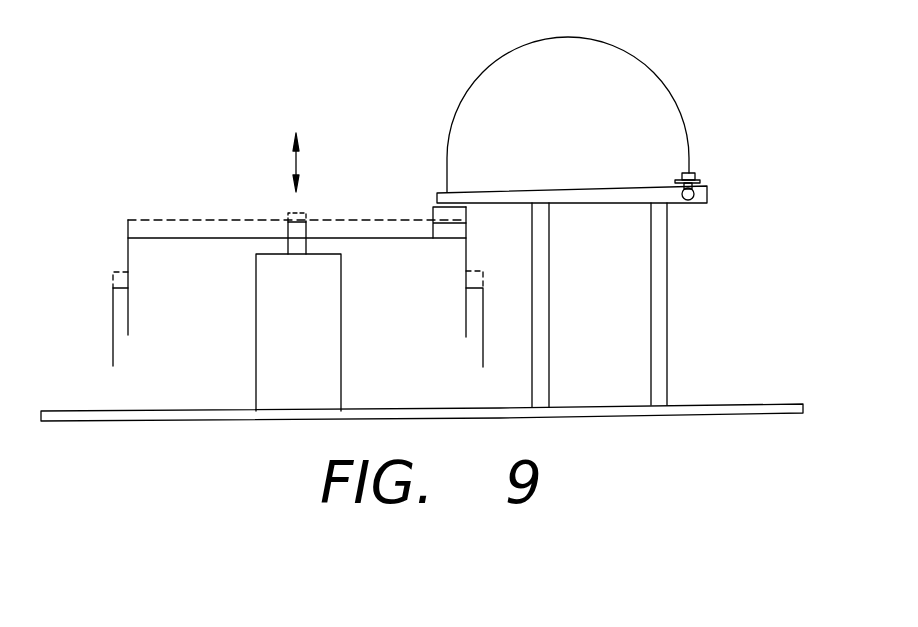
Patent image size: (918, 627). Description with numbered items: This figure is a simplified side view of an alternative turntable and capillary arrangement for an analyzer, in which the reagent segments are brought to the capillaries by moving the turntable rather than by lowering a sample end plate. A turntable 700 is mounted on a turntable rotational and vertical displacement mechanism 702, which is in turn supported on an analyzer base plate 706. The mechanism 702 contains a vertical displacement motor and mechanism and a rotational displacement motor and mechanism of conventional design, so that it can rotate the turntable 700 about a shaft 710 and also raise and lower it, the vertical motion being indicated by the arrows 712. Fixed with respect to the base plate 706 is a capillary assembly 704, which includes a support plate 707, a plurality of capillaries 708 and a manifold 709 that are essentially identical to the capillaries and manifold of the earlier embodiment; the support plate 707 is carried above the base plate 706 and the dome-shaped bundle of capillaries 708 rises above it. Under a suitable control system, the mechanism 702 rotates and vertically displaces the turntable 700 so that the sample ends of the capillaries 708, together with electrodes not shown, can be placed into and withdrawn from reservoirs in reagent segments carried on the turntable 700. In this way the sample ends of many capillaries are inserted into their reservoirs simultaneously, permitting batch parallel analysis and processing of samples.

The turntable 700 is at (129, 252).
The turntable rotational and vertical displacement mechanism 702 is at (258, 343).
The capillary assembly 704 is at (612, 128).
The analyzer base plate 706 is at (755, 406).
The support plate 707 is at (640, 186).
The capillaries 708 is at (498, 58).
The manifold 709 is at (697, 196).
The shaft 710 is at (307, 246).
The arrows 712 is at (287, 158).